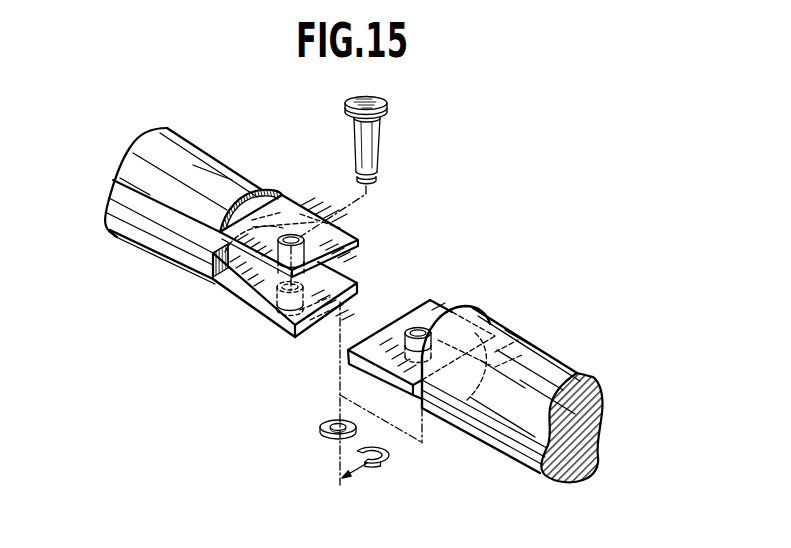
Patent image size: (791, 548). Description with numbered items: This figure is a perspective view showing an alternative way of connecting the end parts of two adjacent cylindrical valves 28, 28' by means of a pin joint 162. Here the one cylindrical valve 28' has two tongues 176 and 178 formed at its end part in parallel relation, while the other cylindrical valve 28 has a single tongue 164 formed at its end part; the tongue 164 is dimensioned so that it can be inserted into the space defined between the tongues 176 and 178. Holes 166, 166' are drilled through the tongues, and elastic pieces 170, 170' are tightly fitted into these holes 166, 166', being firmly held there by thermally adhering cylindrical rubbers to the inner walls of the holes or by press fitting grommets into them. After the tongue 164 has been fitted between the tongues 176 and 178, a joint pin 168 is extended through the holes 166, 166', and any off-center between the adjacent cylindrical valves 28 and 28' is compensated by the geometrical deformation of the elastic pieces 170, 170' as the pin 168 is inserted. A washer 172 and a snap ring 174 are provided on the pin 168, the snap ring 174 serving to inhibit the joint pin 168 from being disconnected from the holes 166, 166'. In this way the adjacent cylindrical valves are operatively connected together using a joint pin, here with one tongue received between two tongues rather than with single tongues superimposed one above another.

The cylindrical valve 28 is at (512, 394).
The cylindrical valve 28' is at (200, 213).
The pin joint 162 is at (446, 212).
The tongue 164 is at (437, 312).
The hole 166 is at (339, 308).
The hole 166' is at (190, 275).
The pin 168 is at (380, 152).
The elastic piece 170 is at (399, 317).
The elastic piece 170' is at (306, 279).
The washer 172 is at (320, 426).
The snap ring 174 is at (383, 457).
The tongue 176 is at (282, 195).
The tongue 178 is at (250, 300).